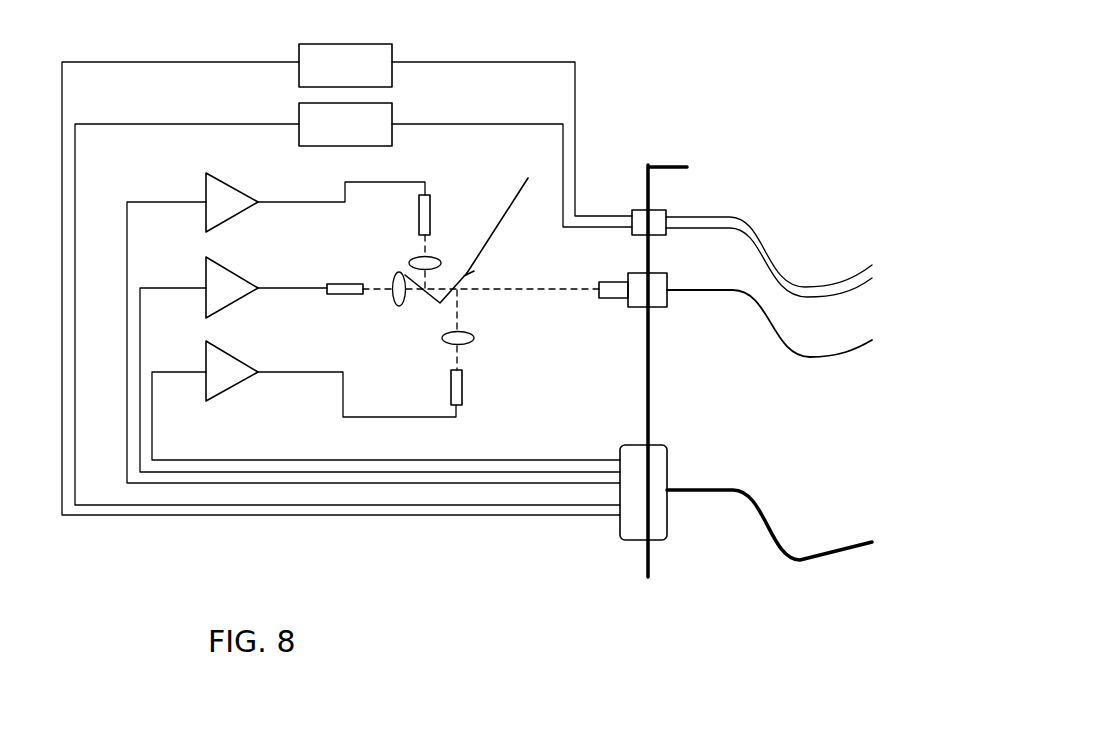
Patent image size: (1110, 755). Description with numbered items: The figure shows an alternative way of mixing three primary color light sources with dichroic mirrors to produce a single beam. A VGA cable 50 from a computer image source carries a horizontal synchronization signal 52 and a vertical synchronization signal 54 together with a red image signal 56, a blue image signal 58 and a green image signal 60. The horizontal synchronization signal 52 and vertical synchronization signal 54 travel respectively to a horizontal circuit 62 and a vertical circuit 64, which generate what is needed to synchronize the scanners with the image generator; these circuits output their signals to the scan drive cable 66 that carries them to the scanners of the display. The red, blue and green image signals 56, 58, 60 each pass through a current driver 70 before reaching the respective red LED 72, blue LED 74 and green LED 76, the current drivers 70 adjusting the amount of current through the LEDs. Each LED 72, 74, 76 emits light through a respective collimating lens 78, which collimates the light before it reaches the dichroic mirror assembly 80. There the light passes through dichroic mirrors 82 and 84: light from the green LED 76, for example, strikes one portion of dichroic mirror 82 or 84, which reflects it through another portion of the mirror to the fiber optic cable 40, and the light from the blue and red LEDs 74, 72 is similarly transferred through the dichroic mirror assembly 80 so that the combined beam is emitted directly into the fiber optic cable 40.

The fiber optic cable 40 is at (743, 295).
The VGA cable 50 is at (780, 541).
The horizontal synchronization signal 52 is at (421, 518).
The vertical synchronization signal 54 is at (480, 506).
The red image signal 56 is at (152, 287).
The blue image signal 58 is at (156, 371).
The green image signal 60 is at (152, 200).
The horizontal circuit 62 is at (347, 44).
The vertical circuit 64 is at (392, 118).
The scan drive cable 66 is at (797, 243).
The current driver 70 is at (230, 183).
The red LED 72 is at (343, 297).
The blue LED 74 is at (451, 385).
The green LED 76 is at (419, 218).
The collimating lens 78 is at (433, 254).
The dichroic mirror assembly 80 is at (505, 270).
The dichroic mirror 82 is at (428, 300).
The dichroic mirror 84 is at (504, 211).